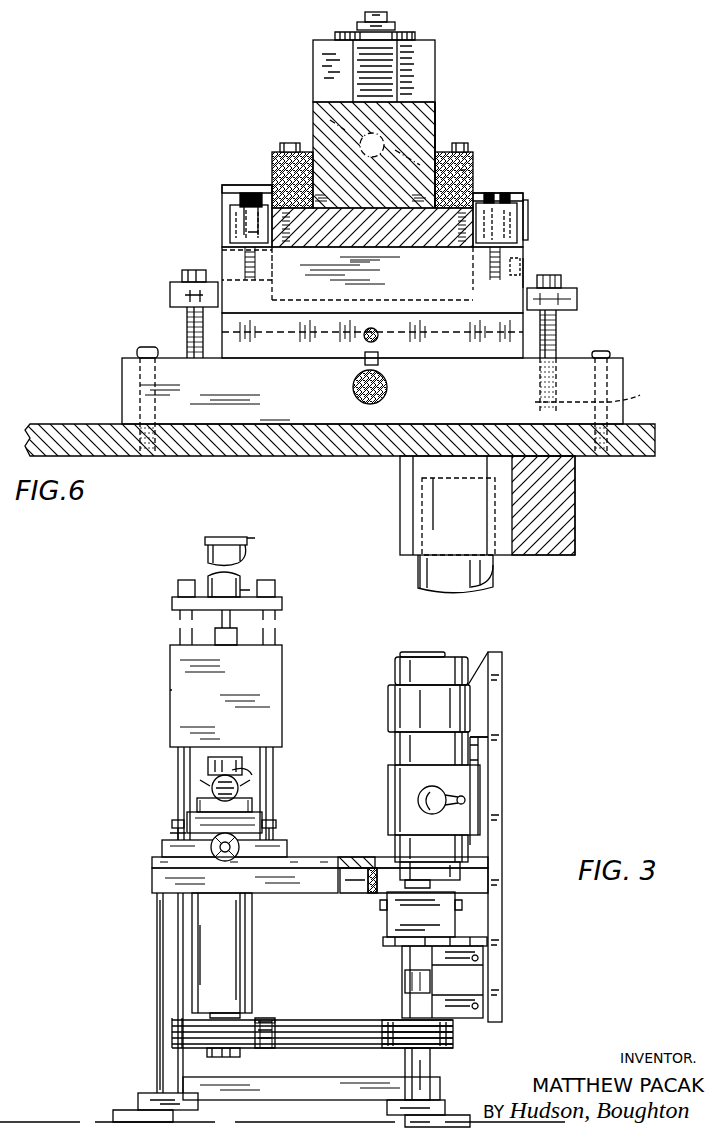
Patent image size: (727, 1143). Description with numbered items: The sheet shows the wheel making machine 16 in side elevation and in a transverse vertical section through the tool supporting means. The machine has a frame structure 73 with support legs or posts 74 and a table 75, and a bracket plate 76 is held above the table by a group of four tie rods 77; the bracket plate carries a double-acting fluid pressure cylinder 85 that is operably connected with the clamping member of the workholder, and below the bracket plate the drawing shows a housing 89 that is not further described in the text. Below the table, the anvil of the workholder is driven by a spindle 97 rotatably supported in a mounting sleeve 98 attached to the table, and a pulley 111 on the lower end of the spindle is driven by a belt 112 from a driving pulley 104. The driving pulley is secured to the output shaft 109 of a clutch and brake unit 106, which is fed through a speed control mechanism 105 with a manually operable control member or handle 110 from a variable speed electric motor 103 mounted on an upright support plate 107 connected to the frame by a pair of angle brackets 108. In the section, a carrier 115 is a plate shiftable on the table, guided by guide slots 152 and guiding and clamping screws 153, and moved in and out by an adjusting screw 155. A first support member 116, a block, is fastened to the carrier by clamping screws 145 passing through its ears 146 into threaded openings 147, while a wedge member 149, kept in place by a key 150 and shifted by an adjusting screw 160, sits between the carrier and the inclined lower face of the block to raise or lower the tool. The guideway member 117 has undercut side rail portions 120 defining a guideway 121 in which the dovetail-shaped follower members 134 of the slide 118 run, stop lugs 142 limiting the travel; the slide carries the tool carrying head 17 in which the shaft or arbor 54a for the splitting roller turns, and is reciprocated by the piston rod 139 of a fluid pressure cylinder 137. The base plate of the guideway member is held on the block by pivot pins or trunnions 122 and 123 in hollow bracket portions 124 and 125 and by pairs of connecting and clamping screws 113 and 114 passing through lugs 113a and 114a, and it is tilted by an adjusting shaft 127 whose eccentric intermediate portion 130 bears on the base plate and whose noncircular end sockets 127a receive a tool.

In FIG. 6, the shaft or arbor 54a is at (392, 26).
In FIG. 6, the tool carrying head 17 is at (425, 60).
In FIG. 6, the slide 118 is at (435, 107).
In FIG. 3, the slide 118 is at (202, 770).
In FIG. 6, the dovetail-shaped follower members 134 is at (462, 143).
In FIG. 6, the side rail portions 120 is at (462, 152).
In FIG. 6, the guideway 121 is at (478, 160).
In FIG. 6, the stop lugs 142 is at (470, 172).
In FIG. 6, the hollow bracket portion 124 is at (490, 193).
In FIG. 6, the connecting and clamping screws 113 is at (490, 205).
In FIG. 6, the pivot pin or trunnion 122 is at (523, 205).
In FIG. 6, the lugs 113a is at (528, 215).
In FIG. 6, the adjusting shaft 127 is at (510, 262).
In FIG. 6, the noncircular end sockets 127a is at (525, 270).
In FIG. 6, the connecting and clamping screws 145 is at (535, 285).
In FIG. 6, the ears 146 is at (560, 295).
In FIG. 6, the wedge member 149 is at (540, 340).
In FIG. 6, the guiding and clamping screws 153 is at (612, 352).
In FIG. 6, the carrier 115 is at (635, 384).
In FIG. 3, the carrier 115 is at (162, 848).
In FIG. 6, the guide slots 152 is at (640, 395).
In FIG. 6, the table 75 is at (655, 435).
In FIG. 3, the table 75 is at (325, 868).
In FIG. 6, the frame structure 73 is at (587, 509).
In FIG. 3, the frame structure 73 is at (271, 901).
In FIG. 6, the support legs or posts 74 is at (495, 572).
In FIG. 3, the support legs or posts 74 is at (157, 928).
In FIG. 6, the piston rod 139 is at (313, 115).
In FIG. 6, the hollow bracket portion 125 is at (276, 175).
In FIG. 6, the connecting and clamping screws 114 is at (248, 192).
In FIG. 6, the pivot pin or trunnion 123 is at (222, 200).
In FIG. 6, the lugs 114a is at (225, 238).
In FIG. 6, the eccentric intermediate portion 130 is at (290, 313).
In FIG. 6, the adjusting screw 160 is at (366, 342).
In FIG. 6, the adjusting screw 155 is at (353, 390).
In FIG. 6, the key 150 is at (380, 360).
In FIG. 6, the first support member 116 is at (496, 338).
In FIG. 3, the first support member 116 is at (166, 835).
In FIG. 6, the openings 147 is at (540, 395).
In FIG. 3, the fluid pressure cylinder 85 is at (205, 555).
In FIG. 3, the bracket plate 76 is at (283, 605).
In FIG. 3, the hopper block 89 is at (282, 660).
In FIG. 3, the wheel making machine 16 is at (164, 698).
In FIG. 3, the variable speed electric motor 103 is at (395, 712).
In FIG. 3, the upright support plate 107 is at (502, 712).
In FIG. 3, the tie rods 77 is at (180, 777).
In FIG. 3, the fluid pressure cylinder 137 is at (212, 785).
In FIG. 3, the guideway member 117 is at (265, 814).
In FIG. 3, the mounting sleeve 98 is at (240, 970).
In FIG. 3, the belt 112 is at (318, 1045).
In FIG. 3, the pulley 111 is at (280, 1015).
In FIG. 3, the driving pulley 104 is at (395, 1006).
In FIG. 3, the spindle 97 is at (225, 1058).
In FIG. 3, the speed control mechanism 105 is at (396, 780).
In FIG. 3, the control member or handle 110 is at (418, 800).
In FIG. 3, the angle brackets 108 is at (480, 770).
In FIG. 3, the clutch and brake unit 106 is at (387, 922).
In FIG. 3, the output shaft 109 is at (410, 978).